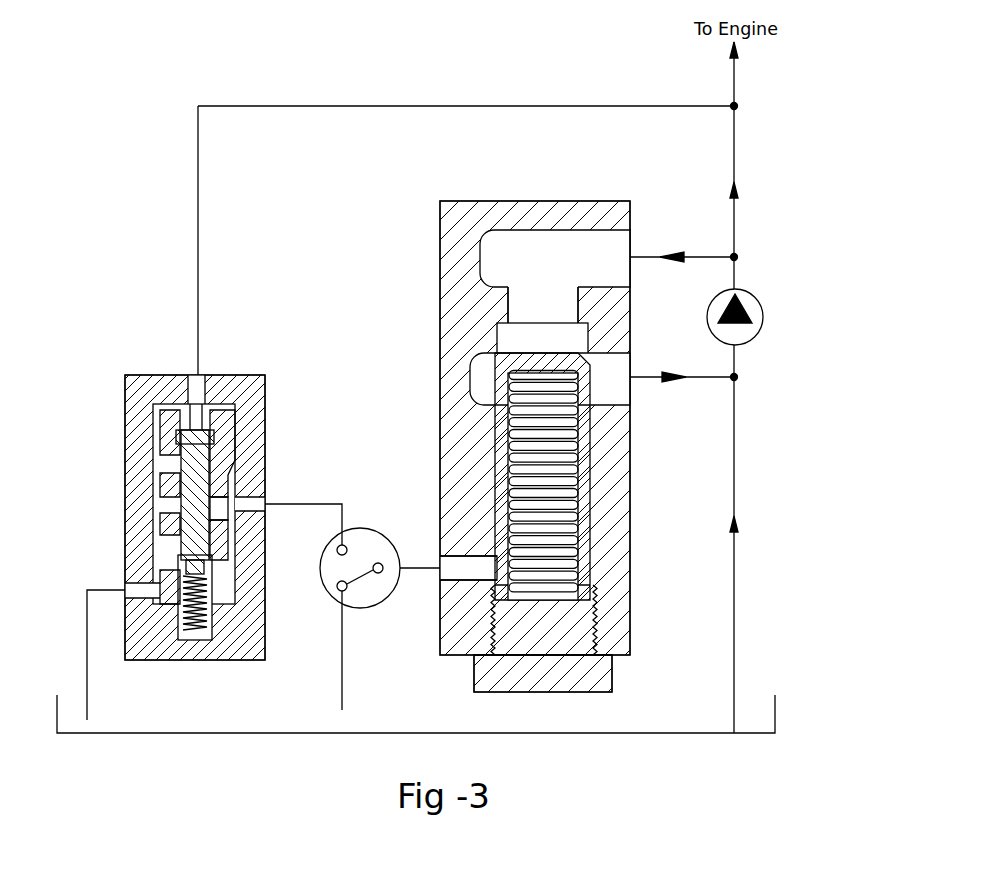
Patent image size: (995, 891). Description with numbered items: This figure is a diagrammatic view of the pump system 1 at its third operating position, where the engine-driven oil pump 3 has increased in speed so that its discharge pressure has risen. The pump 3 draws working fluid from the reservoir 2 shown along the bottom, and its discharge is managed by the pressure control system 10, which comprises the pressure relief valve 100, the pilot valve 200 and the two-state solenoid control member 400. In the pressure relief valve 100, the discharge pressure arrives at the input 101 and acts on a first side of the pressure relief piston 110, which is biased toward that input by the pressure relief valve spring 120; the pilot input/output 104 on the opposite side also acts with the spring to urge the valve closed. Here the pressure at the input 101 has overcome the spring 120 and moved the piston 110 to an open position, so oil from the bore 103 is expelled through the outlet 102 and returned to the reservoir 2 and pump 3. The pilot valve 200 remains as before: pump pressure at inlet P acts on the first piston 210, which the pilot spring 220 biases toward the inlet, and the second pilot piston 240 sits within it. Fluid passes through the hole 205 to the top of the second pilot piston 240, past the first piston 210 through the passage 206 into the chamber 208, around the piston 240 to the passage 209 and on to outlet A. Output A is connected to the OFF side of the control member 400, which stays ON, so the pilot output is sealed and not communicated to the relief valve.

The pump system 1 is at (758, 449).
The reservoir 2 is at (570, 734).
The oil pump 3 is at (758, 302).
The pressure control system 10 is at (362, 224).
The pressure relief valve 100 is at (534, 201).
The input 101 is at (666, 256).
The outlet 102 is at (660, 376).
The bore 103 is at (556, 315).
The pilot input/output 104 is at (420, 567).
The pressure relief piston 110 is at (592, 394).
The pressure relief valve spring 120 is at (606, 520).
The pilot valve 200 is at (125, 514).
The hole 205 is at (212, 408).
The passage 206 is at (166, 476).
The chamber 208 is at (222, 514).
The passage 209 is at (222, 500).
The first piston 210 is at (230, 418).
The pilot spring 220 is at (207, 596).
The second pilot piston 240 is at (186, 452).
The control member 400 is at (382, 602).